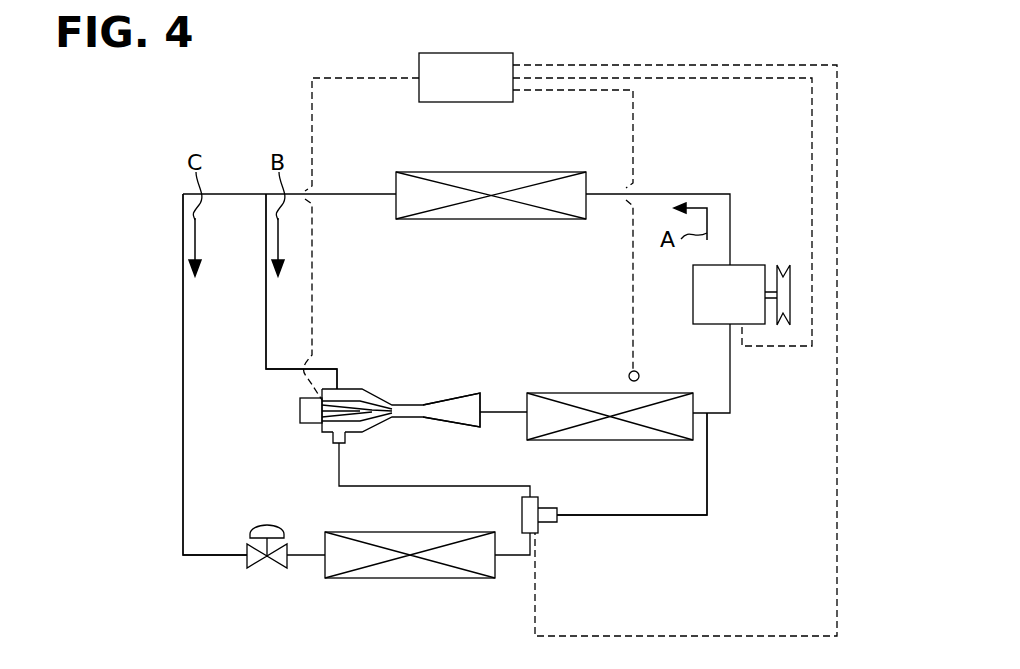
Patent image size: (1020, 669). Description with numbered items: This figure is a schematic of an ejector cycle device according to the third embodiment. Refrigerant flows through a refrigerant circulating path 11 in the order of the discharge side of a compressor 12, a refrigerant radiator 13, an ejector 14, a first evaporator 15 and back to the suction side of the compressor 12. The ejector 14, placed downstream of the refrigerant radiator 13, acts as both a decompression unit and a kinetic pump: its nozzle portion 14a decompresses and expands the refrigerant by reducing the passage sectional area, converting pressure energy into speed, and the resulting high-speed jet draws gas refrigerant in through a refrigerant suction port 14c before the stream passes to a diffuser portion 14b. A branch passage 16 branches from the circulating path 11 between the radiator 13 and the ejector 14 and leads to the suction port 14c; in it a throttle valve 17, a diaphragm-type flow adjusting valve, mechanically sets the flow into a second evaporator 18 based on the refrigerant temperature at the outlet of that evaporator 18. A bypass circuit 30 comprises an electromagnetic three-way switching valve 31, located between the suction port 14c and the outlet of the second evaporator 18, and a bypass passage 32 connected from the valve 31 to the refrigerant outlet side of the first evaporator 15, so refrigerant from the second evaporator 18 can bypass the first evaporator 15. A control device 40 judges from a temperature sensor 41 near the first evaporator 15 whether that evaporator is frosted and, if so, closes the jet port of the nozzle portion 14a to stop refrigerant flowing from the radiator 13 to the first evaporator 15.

The control device 40 is at (480, 53).
The refrigerant radiator 13 is at (478, 172).
The compressor 12 is at (745, 265).
The refrigerant circulating path 11 is at (266, 308).
The branch passage 16 is at (183, 378).
The ejector 14 is at (404, 410).
The nozzle portion 14a is at (358, 402).
The diffuser portion 14b is at (452, 428).
The refrigerant suction port 14c is at (345, 436).
The first evaporator 15 is at (582, 393).
The temperature sensor 41 is at (639, 374).
The throttle valve 17 is at (258, 567).
The second evaporator 18 is at (410, 578).
The electromagnetic three-way switching valve 31 is at (540, 532).
The bypass passage 32 is at (577, 571).
The bypass circuit 30 is at (614, 515).